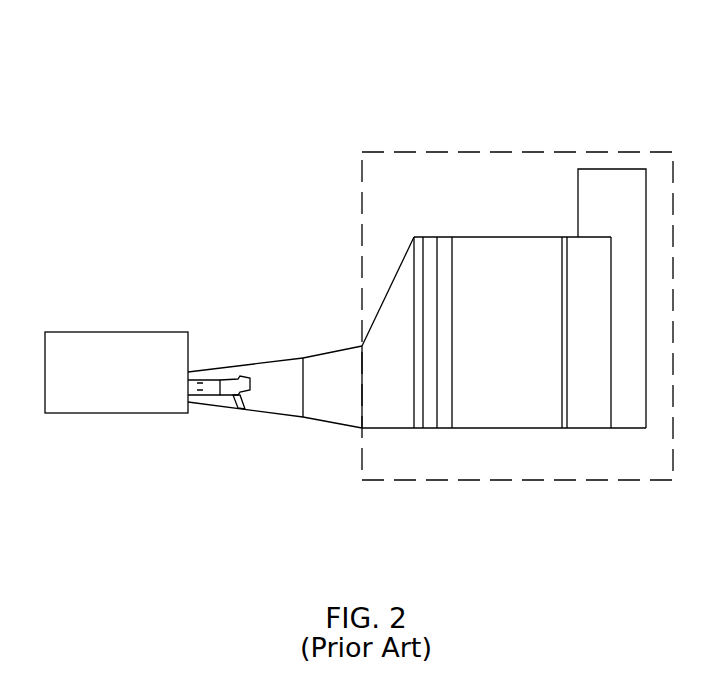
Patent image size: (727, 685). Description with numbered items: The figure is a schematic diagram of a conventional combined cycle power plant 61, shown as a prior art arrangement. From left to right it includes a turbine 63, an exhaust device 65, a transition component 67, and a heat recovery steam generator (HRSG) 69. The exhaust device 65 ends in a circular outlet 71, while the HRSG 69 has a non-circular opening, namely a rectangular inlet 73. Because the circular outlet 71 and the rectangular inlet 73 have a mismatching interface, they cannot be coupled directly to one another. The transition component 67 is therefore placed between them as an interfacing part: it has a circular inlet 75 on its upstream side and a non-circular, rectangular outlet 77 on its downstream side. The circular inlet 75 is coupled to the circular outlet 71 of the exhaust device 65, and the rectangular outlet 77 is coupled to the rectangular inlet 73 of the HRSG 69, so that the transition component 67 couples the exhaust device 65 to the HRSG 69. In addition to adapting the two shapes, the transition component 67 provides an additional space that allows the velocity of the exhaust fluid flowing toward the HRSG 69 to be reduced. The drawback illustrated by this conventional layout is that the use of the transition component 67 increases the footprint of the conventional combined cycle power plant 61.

The conventional combined cycle power plant 61 is at (141, 64).
The turbine 63 is at (118, 332).
The exhaust device 65 is at (252, 363).
The transition component 67 is at (333, 423).
The heat recovery steam generator (HRSG) 69 is at (516, 152).
The circular outlet 71 is at (320, 356).
The rectangular inlet 73 is at (360, 410).
The circular inlet 75 is at (303, 397).
The rectangular outlet 77 is at (362, 373).